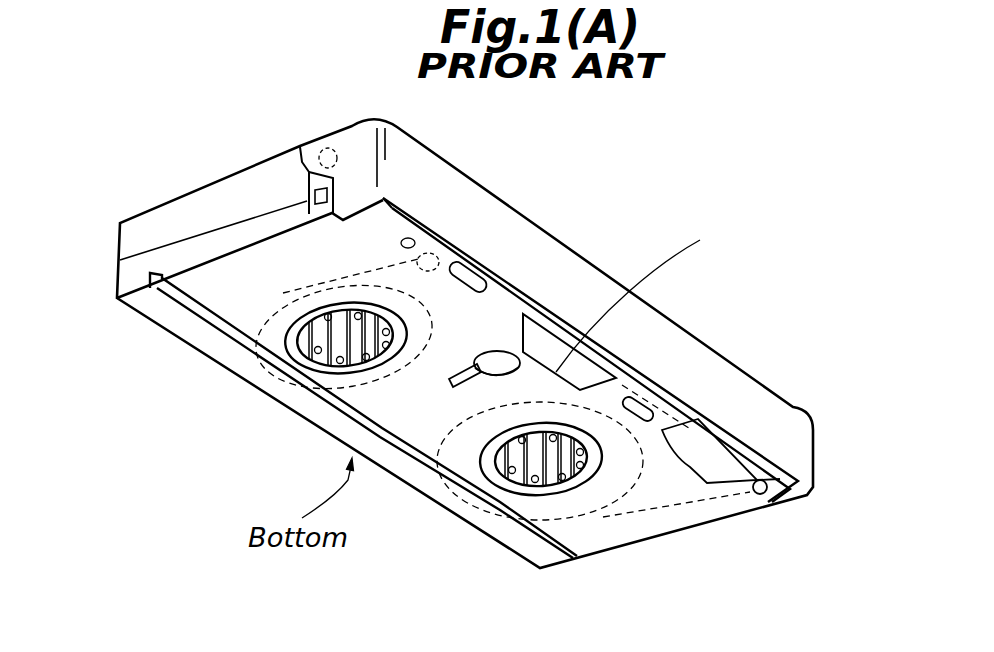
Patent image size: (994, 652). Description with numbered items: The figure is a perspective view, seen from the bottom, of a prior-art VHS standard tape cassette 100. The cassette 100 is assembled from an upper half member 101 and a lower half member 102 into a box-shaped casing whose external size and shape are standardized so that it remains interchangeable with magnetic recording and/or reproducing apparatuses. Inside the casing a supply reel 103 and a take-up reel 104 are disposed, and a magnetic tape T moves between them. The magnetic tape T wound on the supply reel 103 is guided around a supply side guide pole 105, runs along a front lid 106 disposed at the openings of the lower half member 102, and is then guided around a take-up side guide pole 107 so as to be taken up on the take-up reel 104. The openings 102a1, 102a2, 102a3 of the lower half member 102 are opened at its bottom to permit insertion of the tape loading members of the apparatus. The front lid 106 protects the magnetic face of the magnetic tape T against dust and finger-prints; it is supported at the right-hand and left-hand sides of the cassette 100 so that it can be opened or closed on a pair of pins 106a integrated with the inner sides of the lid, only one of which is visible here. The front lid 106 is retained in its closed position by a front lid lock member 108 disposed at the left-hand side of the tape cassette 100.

The VHS tape cassette 100 is at (172, 81).
The upper half member 101 is at (147, 212).
The lower half member 102 is at (150, 262).
The opening 102a1 is at (721, 483).
The opening 102a2 is at (659, 295).
The opening 102a3 is at (452, 266).
The supply reel 103 is at (590, 473).
The take-up reel 104 is at (293, 335).
The supply side guide pole 105 is at (762, 494).
The front lid 106 is at (578, 300).
The pin 106a is at (330, 148).
The take-up side guide pole 107 is at (438, 252).
The front lid lock member 108 is at (308, 195).
The magnetic tape T is at (607, 382).